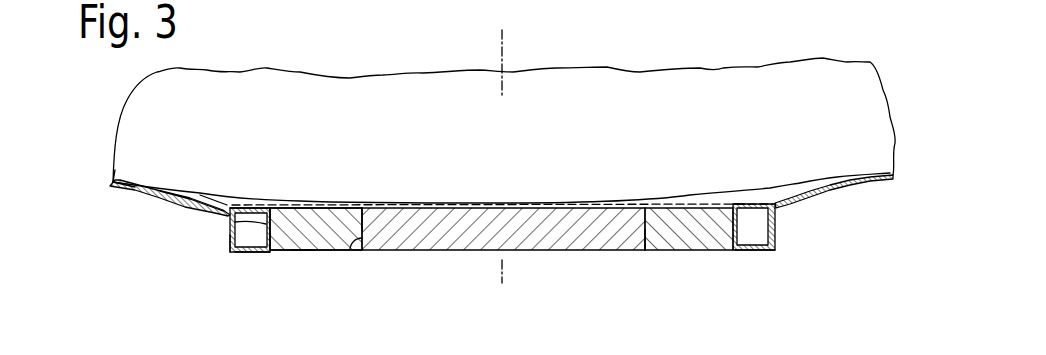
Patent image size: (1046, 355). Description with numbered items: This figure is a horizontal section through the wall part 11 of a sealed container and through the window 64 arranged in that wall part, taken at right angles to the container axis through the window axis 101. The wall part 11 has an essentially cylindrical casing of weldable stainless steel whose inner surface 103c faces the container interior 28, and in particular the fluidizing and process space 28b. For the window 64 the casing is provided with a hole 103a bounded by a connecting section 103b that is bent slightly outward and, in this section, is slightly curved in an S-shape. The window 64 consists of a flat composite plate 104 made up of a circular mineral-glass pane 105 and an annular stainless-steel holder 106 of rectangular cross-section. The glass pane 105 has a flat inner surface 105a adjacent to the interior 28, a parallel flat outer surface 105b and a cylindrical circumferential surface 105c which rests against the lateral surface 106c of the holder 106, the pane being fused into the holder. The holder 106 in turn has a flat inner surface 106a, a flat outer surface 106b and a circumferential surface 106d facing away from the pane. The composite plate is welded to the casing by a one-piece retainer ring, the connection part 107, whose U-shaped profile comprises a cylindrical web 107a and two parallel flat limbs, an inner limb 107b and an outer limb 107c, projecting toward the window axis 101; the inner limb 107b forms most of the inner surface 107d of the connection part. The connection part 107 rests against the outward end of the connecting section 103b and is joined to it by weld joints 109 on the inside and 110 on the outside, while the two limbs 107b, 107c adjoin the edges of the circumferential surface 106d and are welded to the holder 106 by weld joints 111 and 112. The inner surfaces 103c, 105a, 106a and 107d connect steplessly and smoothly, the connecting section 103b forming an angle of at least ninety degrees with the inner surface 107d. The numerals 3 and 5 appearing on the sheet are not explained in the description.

The vehicle roof panel edge 3 is at (121, 193).
The roof panel flange 5 is at (144, 194).
The wall part 11 is at (91, 172).
The container interior 28 is at (362, 83).
The fluidizing and process space 28b is at (445, 88).
The window 64 is at (467, 252).
The window axis 101 is at (502, 49).
The hole 103a is at (227, 203).
The connecting section 103b is at (185, 200).
The inner surface 103c is at (132, 182).
The composite plate 104 is at (645, 252).
The glass pane 105 is at (530, 240).
The inner surface of the glass pane 105a is at (503, 204).
The outer surface of the glass pane 105b is at (597, 252).
The circumferential surface of the glass pane 105c is at (353, 250).
The holder 106 is at (325, 240).
The inner surface of the holder 106a is at (302, 204).
The outer surface of the holder 106b is at (302, 253).
The lateral surface of the holder 106c is at (367, 215).
The circumferential surface of the holder 106d is at (233, 228).
The connection part 107 is at (237, 253).
The web 107a is at (230, 252).
The inner limb 107b is at (251, 209).
The outer limb 107c is at (252, 253).
The inner surface of the connection part 107d is at (232, 208).
The weld joint 109 is at (775, 204).
The weld joint 110 is at (778, 207).
The weld joint 111 is at (735, 204).
The weld joint 112 is at (736, 250).